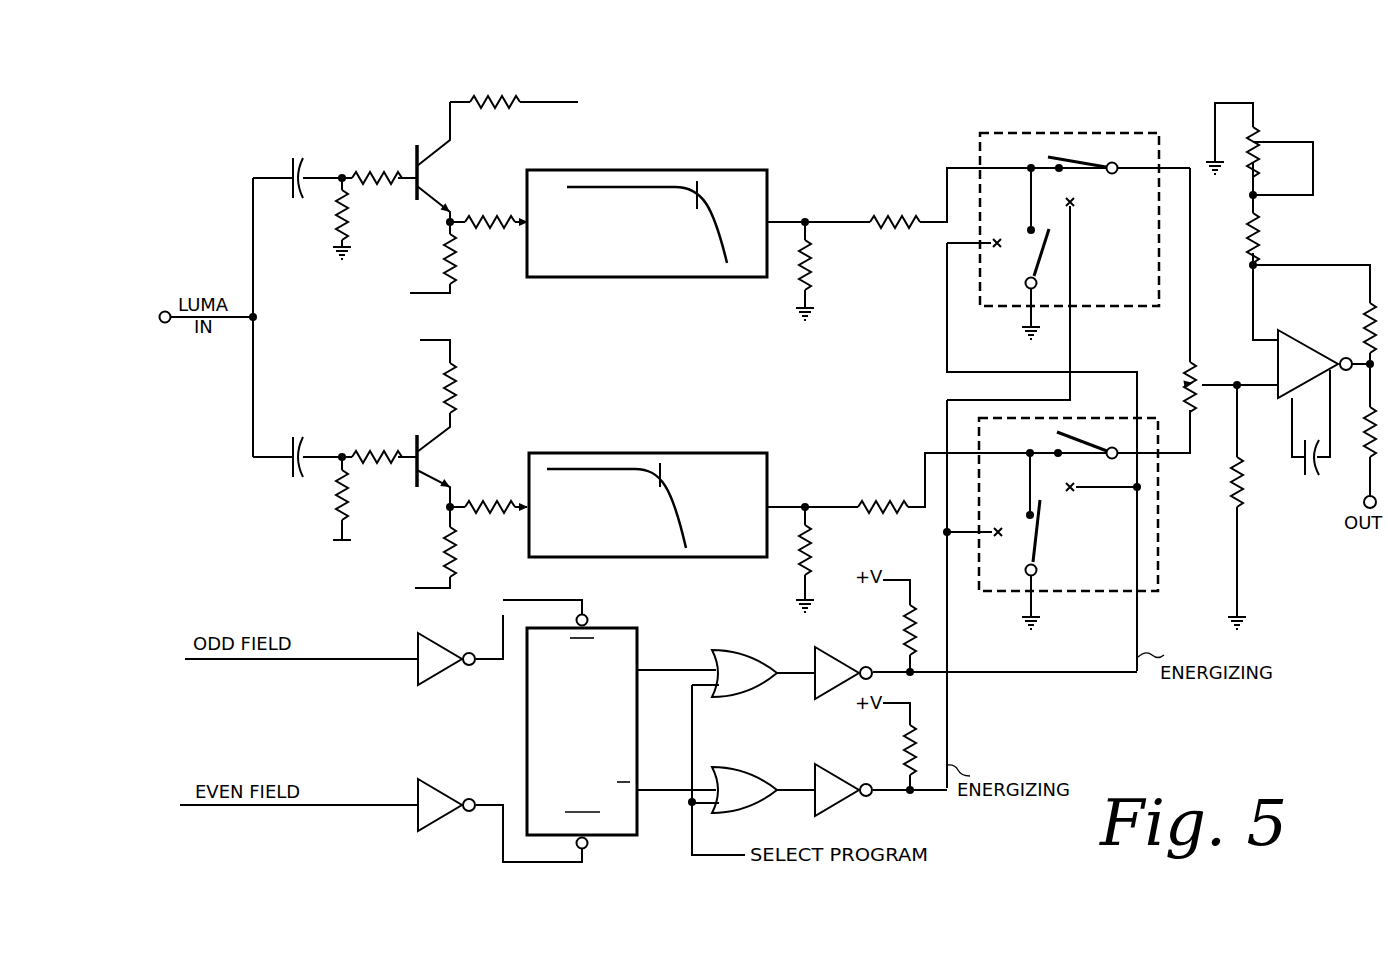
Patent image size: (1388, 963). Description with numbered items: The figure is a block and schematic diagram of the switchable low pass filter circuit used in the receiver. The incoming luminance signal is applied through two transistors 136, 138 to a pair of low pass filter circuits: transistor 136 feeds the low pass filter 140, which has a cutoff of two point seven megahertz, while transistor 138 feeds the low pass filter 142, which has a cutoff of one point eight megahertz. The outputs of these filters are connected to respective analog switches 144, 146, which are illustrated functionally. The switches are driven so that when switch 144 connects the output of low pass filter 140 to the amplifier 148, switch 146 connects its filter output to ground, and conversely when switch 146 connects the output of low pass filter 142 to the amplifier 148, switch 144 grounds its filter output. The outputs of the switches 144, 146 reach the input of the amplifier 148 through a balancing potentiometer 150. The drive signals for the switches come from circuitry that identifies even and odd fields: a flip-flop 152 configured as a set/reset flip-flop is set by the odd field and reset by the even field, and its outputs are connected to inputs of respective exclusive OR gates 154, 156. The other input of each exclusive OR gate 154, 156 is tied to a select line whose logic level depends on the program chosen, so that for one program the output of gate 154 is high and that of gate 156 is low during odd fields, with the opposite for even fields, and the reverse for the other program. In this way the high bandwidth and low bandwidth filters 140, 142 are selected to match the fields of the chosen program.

The transistor 136 is at (423, 163).
The transistor 138 is at (424, 456).
The low pass filter 140 is at (762, 180).
The low pass filter 142 is at (757, 476).
The analog switch 144 is at (1125, 133).
The analog switch 146 is at (1107, 418).
The amplifier 148 is at (1310, 352).
The balancing potentiometer 150 is at (1185, 375).
The flip-flop 152 is at (628, 636).
The exclusive OR gate 154 is at (755, 655).
The exclusive OR gate 156 is at (752, 773).